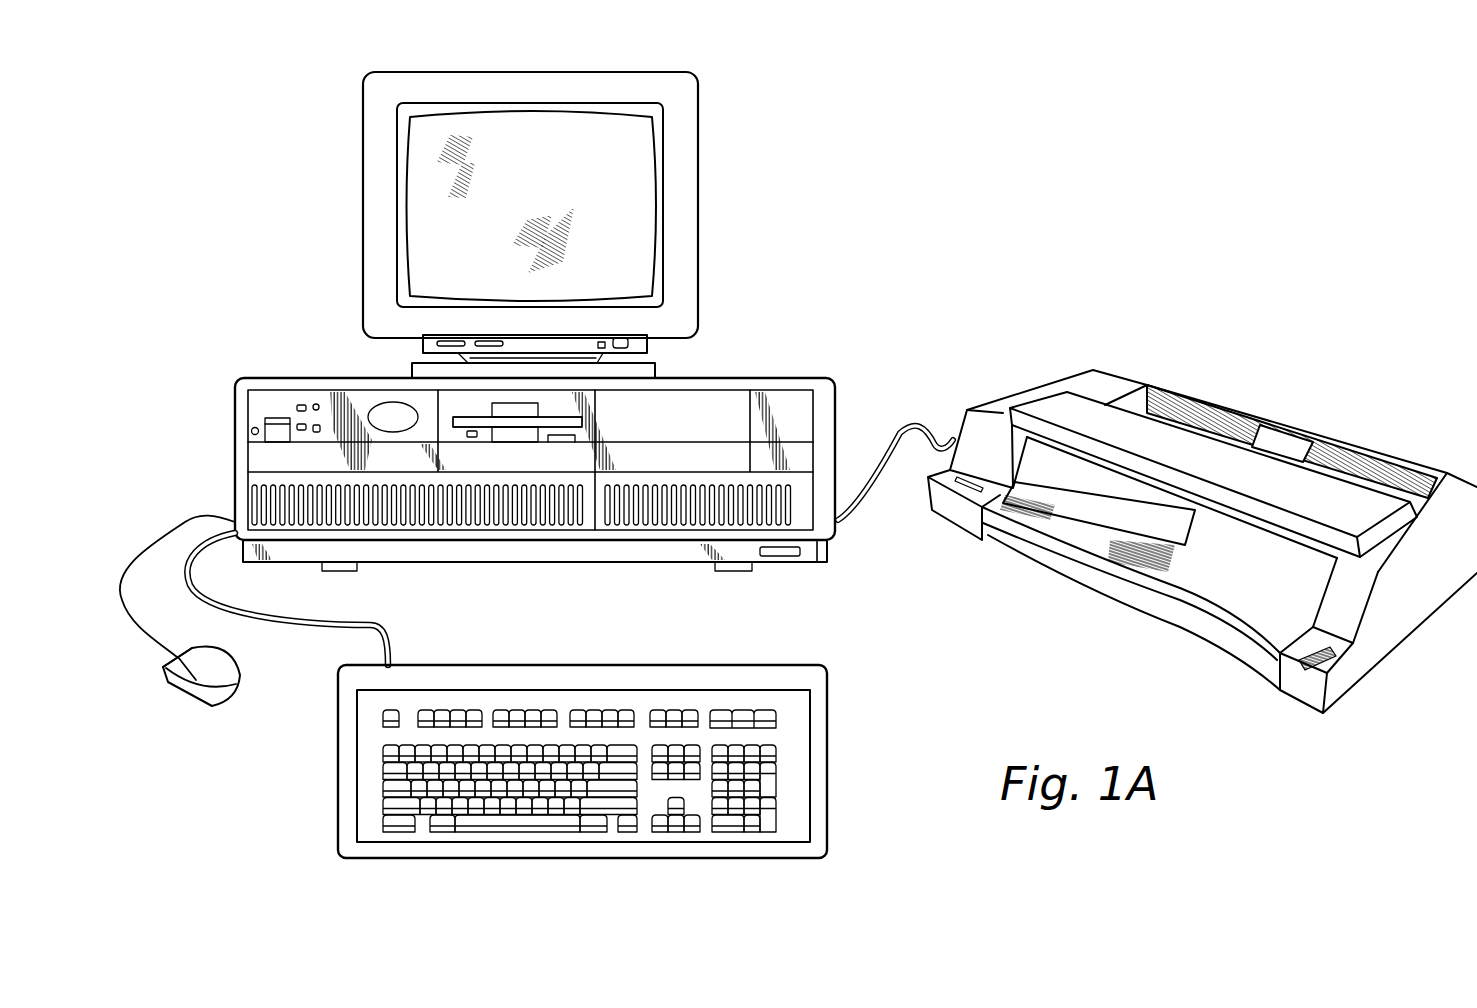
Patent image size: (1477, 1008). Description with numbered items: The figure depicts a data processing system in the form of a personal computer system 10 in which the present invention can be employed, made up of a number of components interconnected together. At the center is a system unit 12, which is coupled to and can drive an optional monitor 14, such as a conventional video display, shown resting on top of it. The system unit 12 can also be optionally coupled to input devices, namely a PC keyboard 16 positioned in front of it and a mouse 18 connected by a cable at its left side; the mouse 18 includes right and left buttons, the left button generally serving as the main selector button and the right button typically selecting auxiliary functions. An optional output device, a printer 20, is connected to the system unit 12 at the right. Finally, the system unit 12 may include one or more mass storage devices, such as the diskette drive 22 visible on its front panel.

The personal computer system 10 is at (918, 190).
The system unit 12 is at (758, 368).
The monitor 14 is at (712, 233).
The PC keyboard 16 is at (700, 652).
The mouse 18 is at (182, 686).
The printer 20 is at (1026, 374).
The diskette drive 22 is at (523, 432).